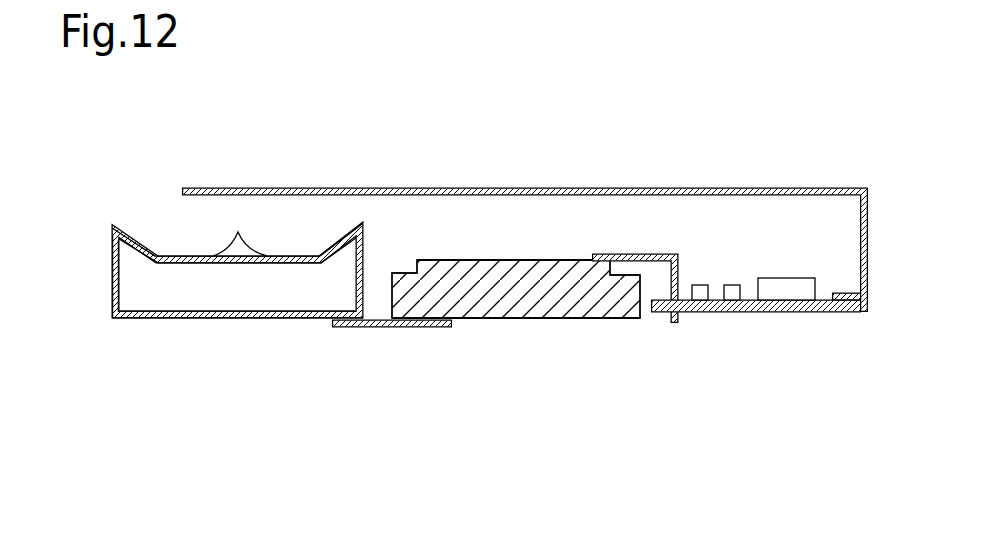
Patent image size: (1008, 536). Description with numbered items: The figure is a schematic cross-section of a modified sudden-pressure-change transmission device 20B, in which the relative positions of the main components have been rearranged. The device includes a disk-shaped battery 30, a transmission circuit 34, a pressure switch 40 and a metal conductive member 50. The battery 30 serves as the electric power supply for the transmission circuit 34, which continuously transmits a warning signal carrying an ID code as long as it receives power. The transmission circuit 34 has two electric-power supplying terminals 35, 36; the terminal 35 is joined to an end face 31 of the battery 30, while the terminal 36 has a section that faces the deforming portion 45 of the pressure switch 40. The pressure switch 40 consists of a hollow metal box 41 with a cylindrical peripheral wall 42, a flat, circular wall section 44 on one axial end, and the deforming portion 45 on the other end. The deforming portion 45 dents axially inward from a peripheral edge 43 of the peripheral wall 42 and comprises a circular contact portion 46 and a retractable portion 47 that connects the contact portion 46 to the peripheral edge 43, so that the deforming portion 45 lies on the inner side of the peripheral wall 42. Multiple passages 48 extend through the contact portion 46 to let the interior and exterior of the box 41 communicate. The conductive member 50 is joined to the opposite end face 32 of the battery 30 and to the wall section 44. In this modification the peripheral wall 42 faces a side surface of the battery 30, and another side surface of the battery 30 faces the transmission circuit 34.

The sudden-pressure-change transmission device 20B is at (64, 135).
The battery 30 is at (421, 254).
The end face 31 is at (526, 319).
The end face 32 is at (523, 260).
The transmission circuit 34 is at (852, 313).
The terminal 35 is at (678, 266).
The terminal 36 is at (811, 188).
The pressure switch 40 is at (109, 237).
The box 41 is at (112, 258).
The peripheral wall 42 is at (112, 296).
The peripheral edge 43 is at (345, 250).
The wall section 44 is at (223, 319).
The deforming portion 45 is at (206, 190).
The contact portion 46 is at (232, 216).
The retractable portion 47 is at (140, 245).
The passages 48 is at (238, 256).
The conductive member 50 is at (414, 328).